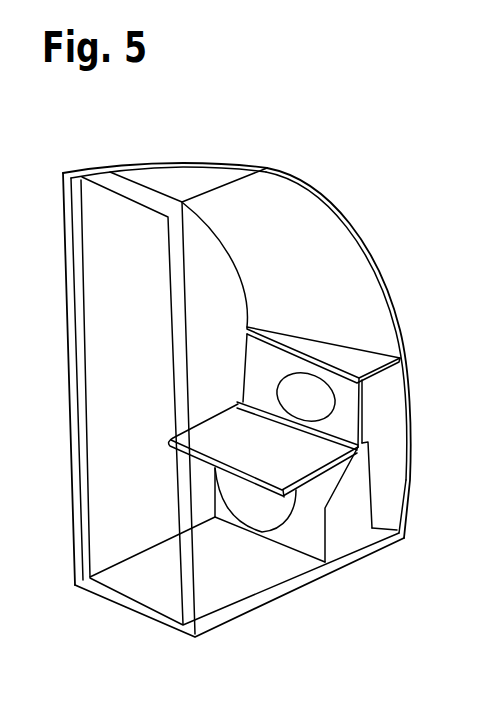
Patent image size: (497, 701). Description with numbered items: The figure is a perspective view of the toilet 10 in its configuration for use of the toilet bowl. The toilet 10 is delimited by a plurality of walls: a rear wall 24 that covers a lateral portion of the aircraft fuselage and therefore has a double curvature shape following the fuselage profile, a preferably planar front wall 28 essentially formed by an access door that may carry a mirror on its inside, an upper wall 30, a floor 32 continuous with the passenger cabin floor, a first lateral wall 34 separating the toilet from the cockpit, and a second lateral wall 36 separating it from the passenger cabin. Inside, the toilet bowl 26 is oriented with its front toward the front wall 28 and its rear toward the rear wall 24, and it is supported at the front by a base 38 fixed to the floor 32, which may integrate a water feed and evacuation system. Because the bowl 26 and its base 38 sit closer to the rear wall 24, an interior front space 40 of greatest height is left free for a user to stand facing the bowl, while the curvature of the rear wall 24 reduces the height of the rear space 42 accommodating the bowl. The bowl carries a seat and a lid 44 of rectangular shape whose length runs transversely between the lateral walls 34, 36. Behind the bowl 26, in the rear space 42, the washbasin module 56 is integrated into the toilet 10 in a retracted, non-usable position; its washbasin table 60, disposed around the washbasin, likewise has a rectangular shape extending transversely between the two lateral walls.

The toilet 10 is at (356, 170).
The rear wall 24 is at (386, 273).
The toilet bowl 26 is at (270, 518).
The front wall 28 is at (124, 400).
The upper wall 30 is at (184, 180).
The floor 32 is at (148, 590).
The first lateral wall 34 is at (117, 248).
The second lateral wall 36 is at (400, 496).
The base 38 is at (344, 538).
The interior front space 40 is at (116, 509).
The rear space 42 is at (201, 344).
The lid 44 is at (304, 458).
The washbasin module 56 is at (398, 420).
The washbasin table 60 is at (346, 390).